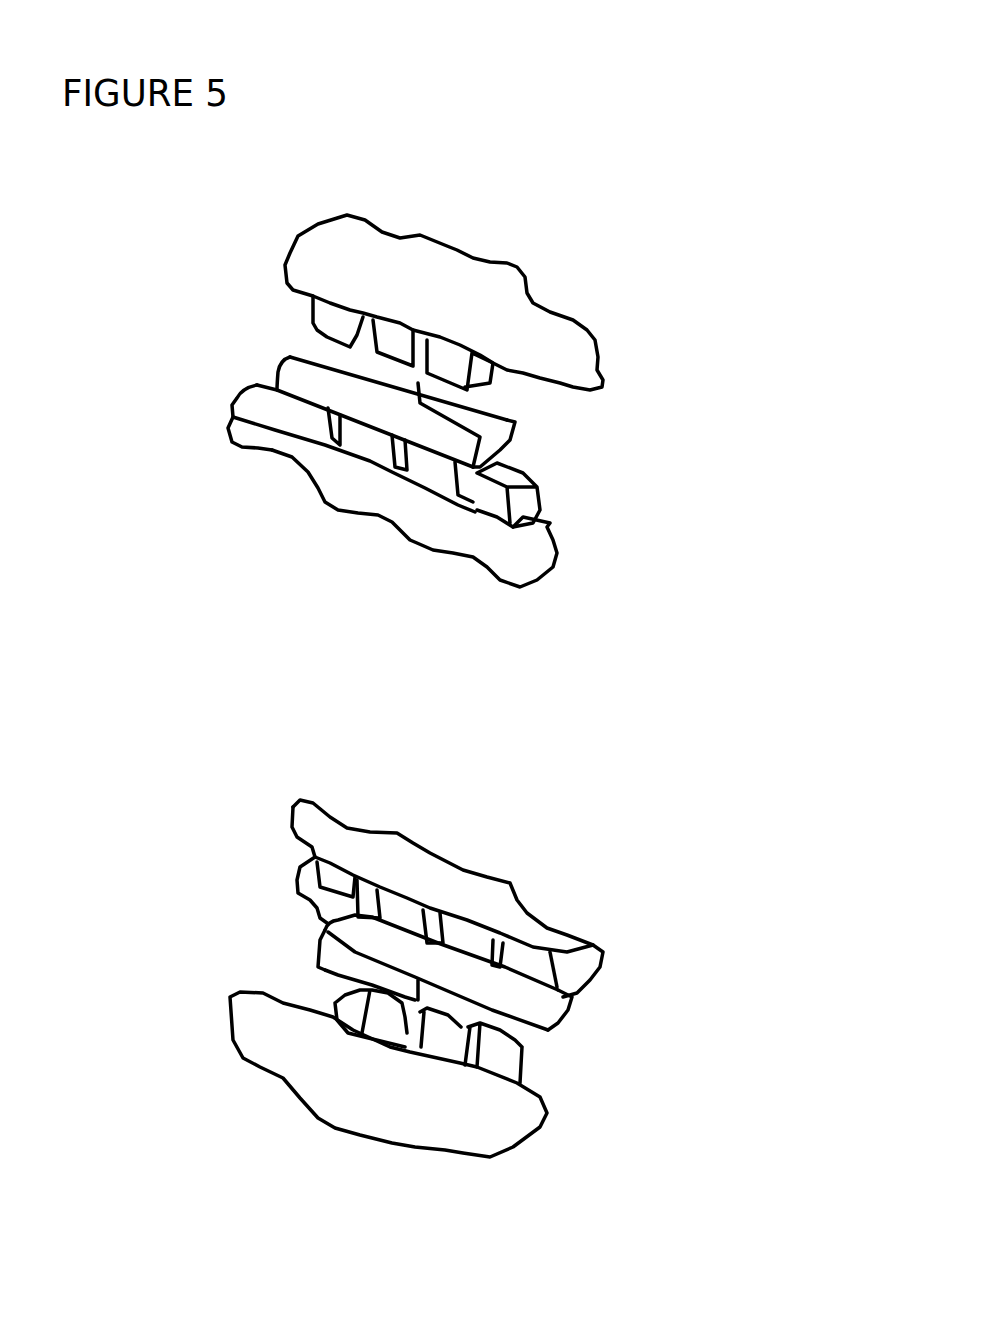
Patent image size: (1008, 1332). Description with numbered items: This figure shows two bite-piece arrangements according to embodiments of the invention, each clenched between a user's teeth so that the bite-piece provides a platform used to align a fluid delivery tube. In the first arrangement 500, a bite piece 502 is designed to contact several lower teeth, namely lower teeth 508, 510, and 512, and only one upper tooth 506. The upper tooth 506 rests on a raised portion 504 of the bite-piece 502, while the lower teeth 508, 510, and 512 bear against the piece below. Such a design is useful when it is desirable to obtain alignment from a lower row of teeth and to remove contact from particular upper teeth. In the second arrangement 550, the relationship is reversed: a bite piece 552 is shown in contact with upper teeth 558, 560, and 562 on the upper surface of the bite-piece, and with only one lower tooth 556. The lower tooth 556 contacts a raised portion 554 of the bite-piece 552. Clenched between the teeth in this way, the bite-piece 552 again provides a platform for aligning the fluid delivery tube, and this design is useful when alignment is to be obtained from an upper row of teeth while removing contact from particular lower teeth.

The bite-piece arrangement 500 is at (873, 120).
The bite piece 502 is at (295, 369).
The raised portion 504 is at (378, 381).
The upper tooth 506 is at (397, 340).
The lower tooth 508 is at (299, 418).
The lower tooth 510 is at (368, 450).
The lower tooth 512 is at (440, 474).
The bite-piece arrangement 550 is at (725, 808).
The bite piece 552 is at (517, 1003).
The raised portion 554 is at (443, 1002).
The lower tooth 556 is at (430, 1047).
The upper tooth 558 is at (402, 918).
The upper tooth 560 is at (470, 933).
The upper tooth 562 is at (530, 970).